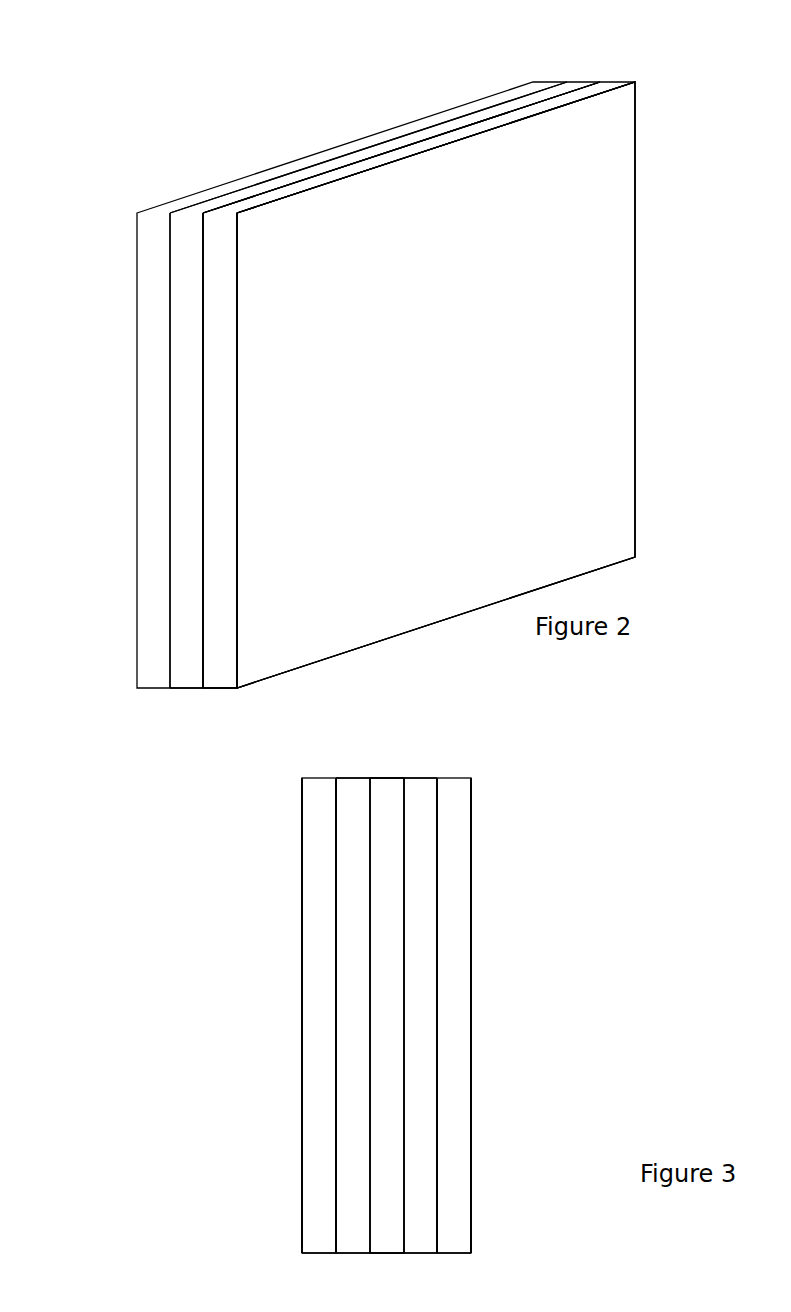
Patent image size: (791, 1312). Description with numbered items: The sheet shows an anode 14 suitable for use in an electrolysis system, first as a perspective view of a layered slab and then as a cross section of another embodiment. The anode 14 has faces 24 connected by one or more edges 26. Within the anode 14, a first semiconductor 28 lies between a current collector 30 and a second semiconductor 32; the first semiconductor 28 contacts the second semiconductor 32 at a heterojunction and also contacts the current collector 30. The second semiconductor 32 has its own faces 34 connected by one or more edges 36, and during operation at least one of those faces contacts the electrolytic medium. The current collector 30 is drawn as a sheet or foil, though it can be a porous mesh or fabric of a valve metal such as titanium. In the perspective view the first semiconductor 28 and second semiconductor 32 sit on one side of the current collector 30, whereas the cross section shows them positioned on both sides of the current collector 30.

In FIG. 2, the anode 14 is at (120, 200).
In FIG. 3, the anode 14 is at (490, 768).
In FIG. 2, the faces 24 is at (615, 290).
In FIG. 3, the faces 24 is at (280, 938).
In FIG. 2, the edges 26 is at (428, 150).
In FIG. 3, the edges 26 is at (471, 753).
In FIG. 2, the first semiconductor 28 is at (563, 88).
In FIG. 3, the first semiconductor 28 is at (350, 1137).
In FIG. 2, the current collector 30 is at (505, 98).
In FIG. 3, the current collector 30 is at (385, 1242).
In FIG. 2, the second semiconductor 32 is at (596, 88).
In FIG. 3, the second semiconductor 32 is at (318, 1170).
In FIG. 2, the faces 34 is at (593, 186).
In FIG. 3, the faces 34 is at (302, 847).
In FIG. 2, the edges 36 is at (237, 702).
In FIG. 3, the edges 36 is at (336, 1263).